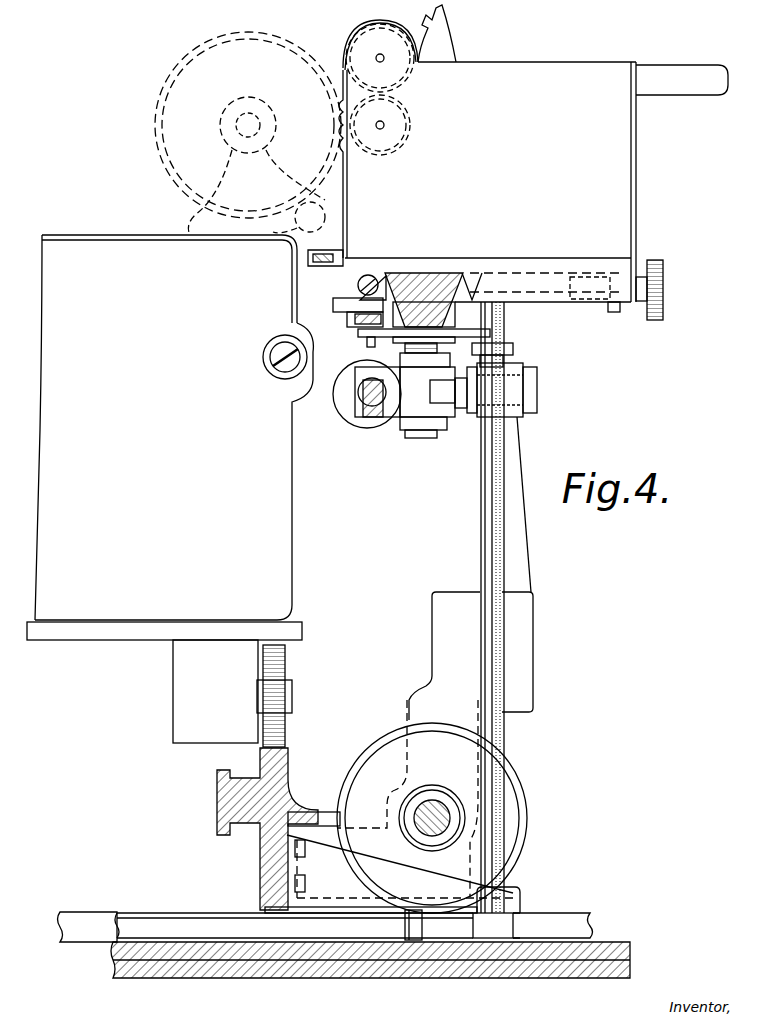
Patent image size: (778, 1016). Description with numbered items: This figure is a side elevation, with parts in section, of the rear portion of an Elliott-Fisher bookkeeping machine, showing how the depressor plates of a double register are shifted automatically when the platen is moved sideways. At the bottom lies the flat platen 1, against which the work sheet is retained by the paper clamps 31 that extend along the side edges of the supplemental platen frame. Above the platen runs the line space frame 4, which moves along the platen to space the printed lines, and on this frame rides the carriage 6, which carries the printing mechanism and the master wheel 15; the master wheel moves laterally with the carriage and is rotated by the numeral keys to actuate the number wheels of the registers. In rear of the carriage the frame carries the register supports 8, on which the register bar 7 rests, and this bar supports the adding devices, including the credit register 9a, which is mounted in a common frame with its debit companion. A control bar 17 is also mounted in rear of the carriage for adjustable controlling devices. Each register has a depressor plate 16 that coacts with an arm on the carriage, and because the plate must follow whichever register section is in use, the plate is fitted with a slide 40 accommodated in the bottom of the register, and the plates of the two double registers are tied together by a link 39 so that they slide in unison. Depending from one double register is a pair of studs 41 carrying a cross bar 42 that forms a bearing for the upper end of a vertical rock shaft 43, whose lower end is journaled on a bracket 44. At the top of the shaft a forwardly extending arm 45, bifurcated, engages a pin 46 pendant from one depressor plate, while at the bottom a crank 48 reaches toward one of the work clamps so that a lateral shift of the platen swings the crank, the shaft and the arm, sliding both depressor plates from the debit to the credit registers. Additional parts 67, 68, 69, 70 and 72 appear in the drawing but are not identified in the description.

The flat platen 1 is at (122, 975).
The line space frame 4 is at (292, 785).
The carriage 6 is at (70, 245).
The register bar 7 is at (415, 272).
The register supports 8 is at (538, 400).
The credit register 9a is at (624, 187).
The master wheel 15 is at (156, 93).
The depressor plate 16 is at (338, 305).
The control bar 17 is at (372, 418).
The paper clamps 31 is at (173, 935).
The link 39 is at (366, 323).
The slide 40 is at (360, 282).
The studs 41 is at (506, 312).
The cross bar 42 is at (514, 349).
The vertical rock shaft 43 is at (497, 530).
The bracket 44 is at (447, 880).
The forwardly extending arm 45 is at (460, 332).
The pin 46 is at (366, 347).
The crank 48 is at (415, 915).
The body 67 is at (437, 418).
The pin 68 is at (462, 410).
The flange 69 is at (538, 375).
The nut 70 is at (392, 420).
The bracket 72 is at (355, 400).